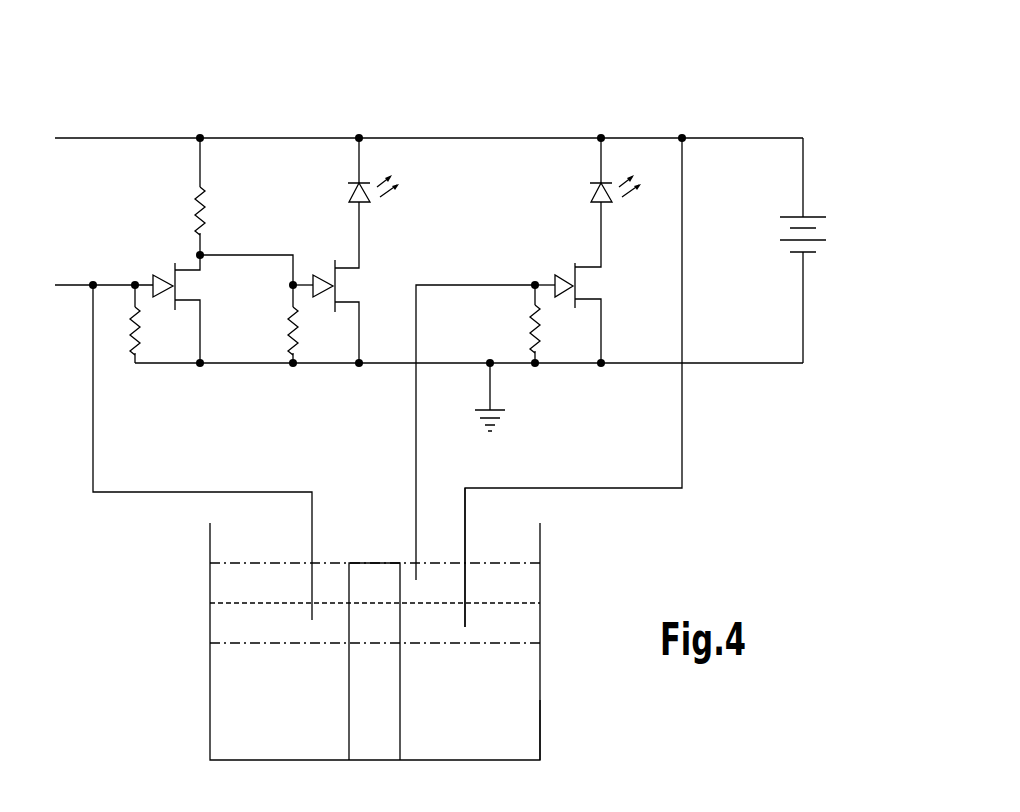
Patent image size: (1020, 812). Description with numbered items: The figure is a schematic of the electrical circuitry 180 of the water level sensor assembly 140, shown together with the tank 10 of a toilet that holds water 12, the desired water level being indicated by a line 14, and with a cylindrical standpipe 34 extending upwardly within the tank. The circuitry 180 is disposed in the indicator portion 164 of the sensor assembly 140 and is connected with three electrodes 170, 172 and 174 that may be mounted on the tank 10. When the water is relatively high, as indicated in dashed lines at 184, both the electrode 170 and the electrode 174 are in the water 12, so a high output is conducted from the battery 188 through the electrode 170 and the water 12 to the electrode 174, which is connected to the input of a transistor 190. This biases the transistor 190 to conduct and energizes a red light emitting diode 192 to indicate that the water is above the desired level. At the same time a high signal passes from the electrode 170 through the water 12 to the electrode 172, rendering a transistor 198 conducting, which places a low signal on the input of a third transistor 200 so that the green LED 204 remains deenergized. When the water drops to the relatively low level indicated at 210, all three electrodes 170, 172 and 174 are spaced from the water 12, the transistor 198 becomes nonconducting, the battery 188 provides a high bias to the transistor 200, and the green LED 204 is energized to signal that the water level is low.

The tank 10 is at (195, 690).
The water 12 is at (503, 713).
The line 14 is at (243, 603).
The standpipe 34 is at (350, 714).
The water level sensor assembly 140 is at (752, 98).
The indicator portion 164 is at (263, 88).
The electrode 170 is at (465, 540).
The electrode 172 is at (310, 527).
The electrode 174 is at (415, 494).
The electrical circuitry 180 is at (385, 100).
The relatively high water level 184 is at (513, 562).
The battery 188 is at (788, 230).
The transistor 190 is at (550, 256).
The red light emitting diode 192 is at (592, 198).
The transistor 198 is at (150, 255).
The third transistor 200 is at (310, 256).
The green LED 204 is at (354, 196).
The relatively low water level 210 is at (510, 643).